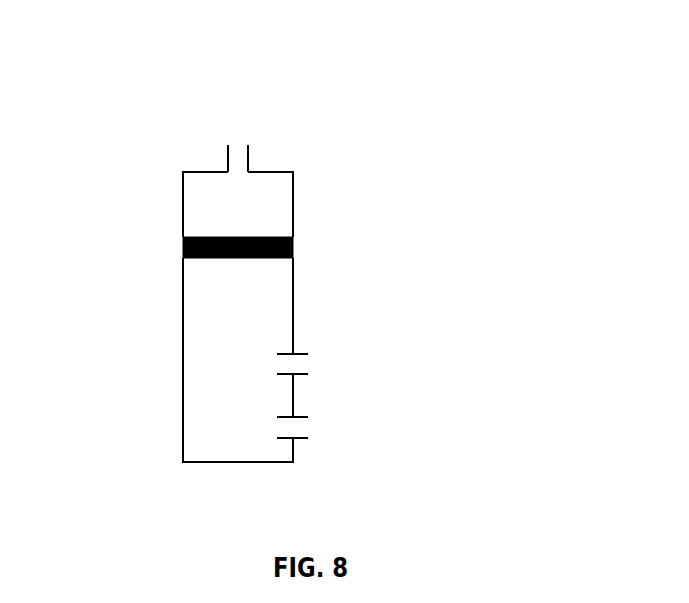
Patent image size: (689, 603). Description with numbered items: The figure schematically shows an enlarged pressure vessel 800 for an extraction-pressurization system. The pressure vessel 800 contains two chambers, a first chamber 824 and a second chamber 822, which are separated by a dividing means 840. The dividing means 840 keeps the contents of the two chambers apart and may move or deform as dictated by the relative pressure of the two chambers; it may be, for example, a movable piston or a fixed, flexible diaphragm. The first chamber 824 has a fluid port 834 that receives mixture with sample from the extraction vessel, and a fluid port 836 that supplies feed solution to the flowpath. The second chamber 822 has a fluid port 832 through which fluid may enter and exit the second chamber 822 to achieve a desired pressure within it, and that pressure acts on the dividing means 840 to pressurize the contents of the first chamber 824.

The pressure vessel 800 is at (304, 74).
The second chamber 822 is at (165, 191).
The first chamber 824 is at (168, 371).
The fluid port 832 is at (236, 135).
The fluid port 834 is at (334, 363).
The fluid port 836 is at (344, 423).
The dividing means 840 is at (314, 248).